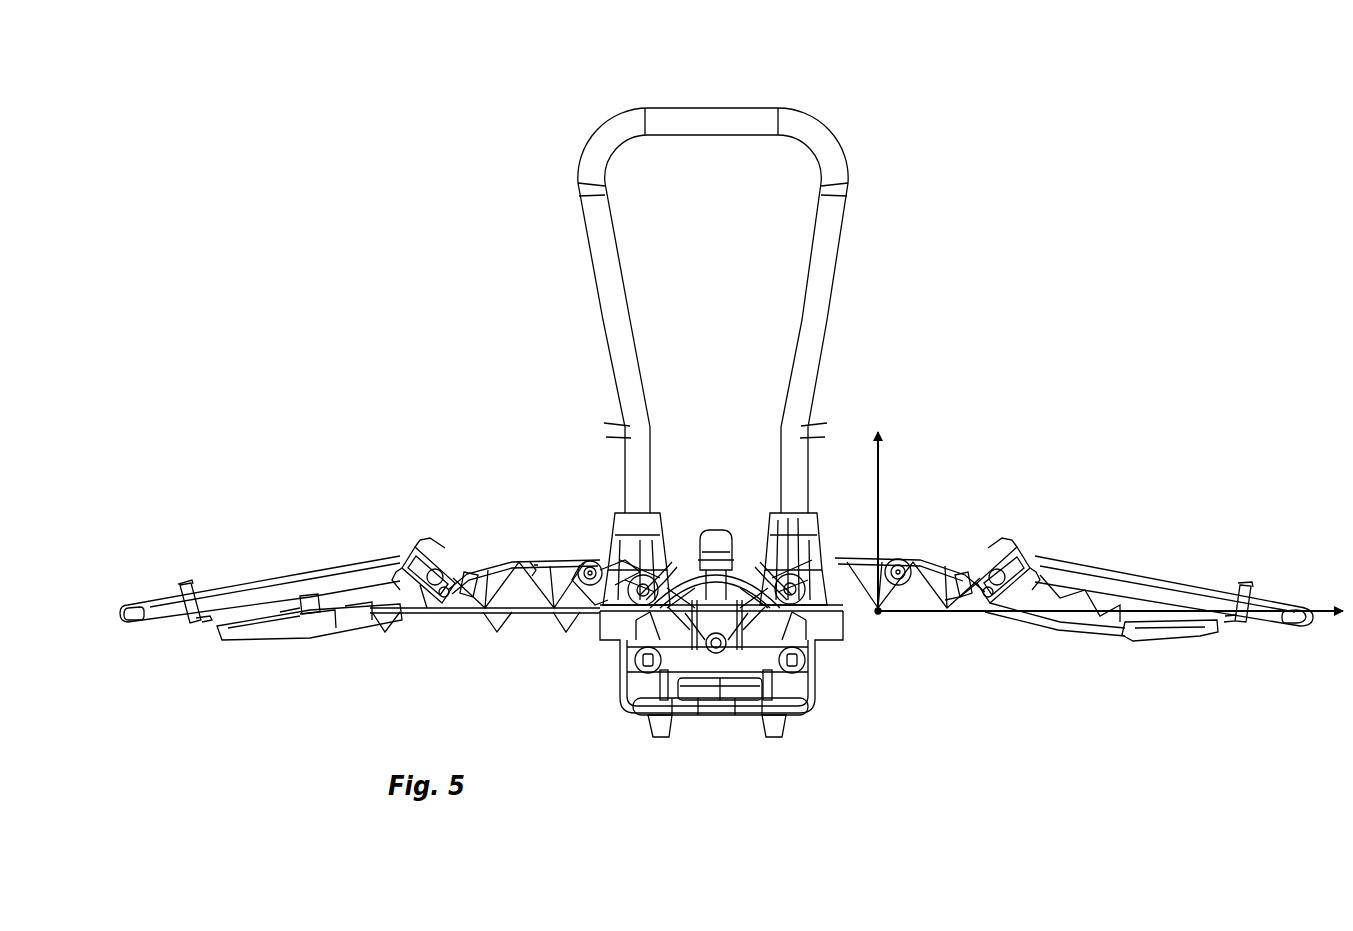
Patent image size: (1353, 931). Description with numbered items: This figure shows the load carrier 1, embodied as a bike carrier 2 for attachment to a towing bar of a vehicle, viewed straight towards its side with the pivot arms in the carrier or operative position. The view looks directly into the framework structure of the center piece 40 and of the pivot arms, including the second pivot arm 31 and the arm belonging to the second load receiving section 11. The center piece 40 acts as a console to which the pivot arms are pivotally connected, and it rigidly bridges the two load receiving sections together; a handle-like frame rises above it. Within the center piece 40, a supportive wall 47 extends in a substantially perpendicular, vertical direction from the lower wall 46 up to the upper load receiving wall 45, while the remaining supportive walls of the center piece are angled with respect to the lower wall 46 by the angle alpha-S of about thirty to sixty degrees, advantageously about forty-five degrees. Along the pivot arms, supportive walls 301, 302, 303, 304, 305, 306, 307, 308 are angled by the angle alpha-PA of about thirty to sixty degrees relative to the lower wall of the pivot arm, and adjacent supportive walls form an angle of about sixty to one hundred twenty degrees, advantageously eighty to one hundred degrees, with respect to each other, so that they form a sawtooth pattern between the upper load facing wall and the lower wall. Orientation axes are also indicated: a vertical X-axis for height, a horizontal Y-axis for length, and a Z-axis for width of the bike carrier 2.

The load carrier 1 is at (957, 126).
The bike carrier 2 is at (566, 468).
The second load receiving section 11 is at (1102, 566).
The second pivot arm 31 is at (1040, 632).
The center piece 40 is at (748, 580).
The upper load receiving wall 45 is at (680, 575).
The lower wall 46 is at (665, 643).
The supportive wall 47 is at (764, 643).
The supportive wall 301 is at (352, 622).
The supportive wall 302 is at (375, 605).
The supportive wall 303 is at (388, 610).
The supportive wall 304 is at (425, 608).
The supportive wall 305 is at (480, 568).
The supportive wall 306 is at (503, 567).
The supportive wall 307 is at (552, 583).
The supportive wall 308 is at (573, 567).